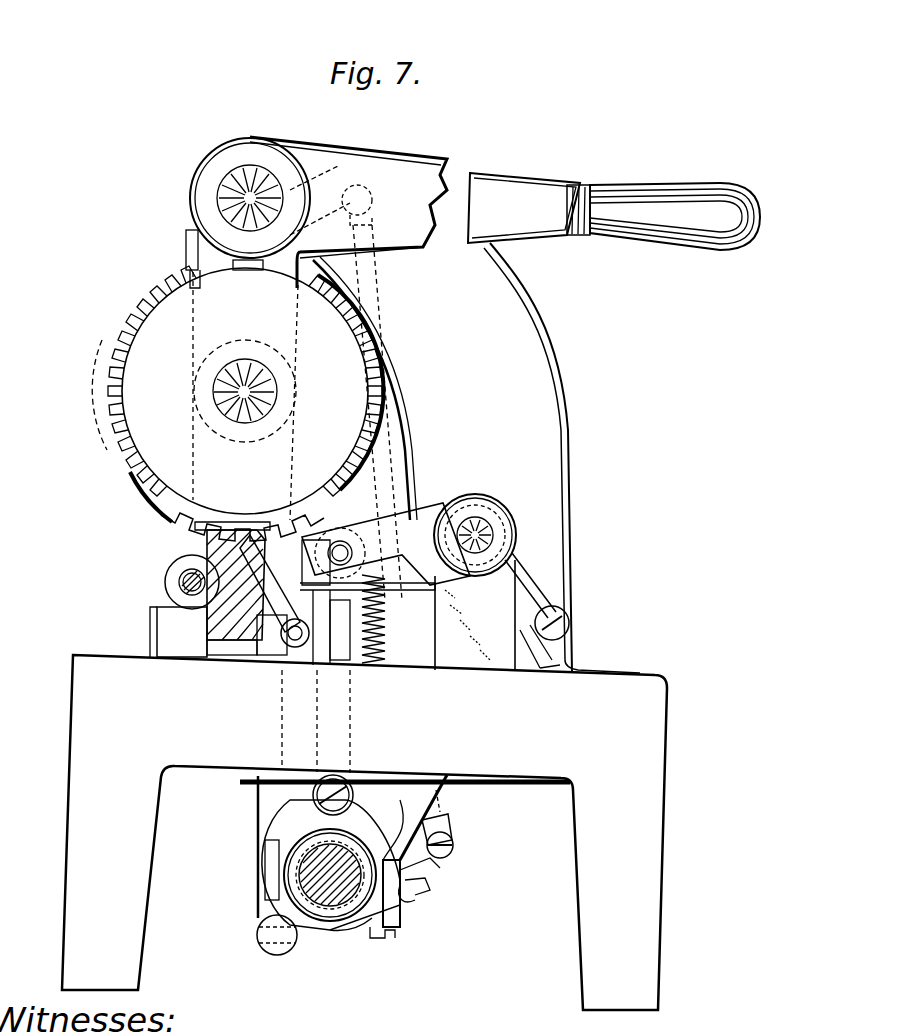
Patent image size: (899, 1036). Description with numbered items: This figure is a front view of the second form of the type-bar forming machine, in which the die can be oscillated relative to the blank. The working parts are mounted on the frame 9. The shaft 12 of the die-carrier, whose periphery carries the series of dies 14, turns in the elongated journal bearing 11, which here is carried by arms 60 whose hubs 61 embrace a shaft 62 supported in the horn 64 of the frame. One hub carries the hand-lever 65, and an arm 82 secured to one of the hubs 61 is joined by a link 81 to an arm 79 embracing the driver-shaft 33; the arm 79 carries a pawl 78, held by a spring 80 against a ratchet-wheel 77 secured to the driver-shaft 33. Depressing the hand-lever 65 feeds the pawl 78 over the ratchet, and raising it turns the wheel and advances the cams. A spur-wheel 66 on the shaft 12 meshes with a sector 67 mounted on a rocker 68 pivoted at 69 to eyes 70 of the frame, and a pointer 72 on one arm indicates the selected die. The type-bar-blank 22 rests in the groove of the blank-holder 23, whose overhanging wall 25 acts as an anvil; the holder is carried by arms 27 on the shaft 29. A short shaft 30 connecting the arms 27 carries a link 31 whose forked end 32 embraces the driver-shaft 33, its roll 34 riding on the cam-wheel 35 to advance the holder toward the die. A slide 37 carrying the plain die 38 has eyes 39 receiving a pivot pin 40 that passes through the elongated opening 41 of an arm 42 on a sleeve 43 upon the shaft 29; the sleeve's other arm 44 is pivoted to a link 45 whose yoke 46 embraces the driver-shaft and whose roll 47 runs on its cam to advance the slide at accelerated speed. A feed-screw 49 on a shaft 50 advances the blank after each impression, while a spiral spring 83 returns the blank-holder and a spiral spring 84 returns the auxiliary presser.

The frame 9 is at (230, 752).
The journal bearing 11 is at (210, 420).
The shaft 12 is at (262, 398).
The dies 14 is at (120, 380).
The type-bar-blank 22 is at (215, 640).
The blank-holder 23 is at (178, 572).
The overhanging wall 25 is at (215, 532).
The arms 27 is at (415, 505).
The shaft 29 is at (492, 535).
The short shaft 30 is at (352, 553).
The link 31 is at (305, 660).
The forked end 32 is at (398, 928).
The driver-shaft 33 is at (322, 905).
The roll 34 is at (313, 795).
The cam-wheel 35 is at (300, 830).
The slide 37 is at (278, 515).
The plain die 38 is at (238, 525).
The eyes 39 is at (345, 530).
The pivot pin 40 is at (308, 626).
The elongated opening 41 is at (265, 660).
The arm 42 is at (455, 505).
The sleeve 43 is at (505, 518).
The arm 44 is at (535, 580).
The link 45 is at (536, 672).
The yoke 46 is at (350, 932).
The roll 47 is at (270, 952).
The feed-screw 49 is at (170, 588).
The shaft 50 is at (180, 582).
The arms 60 is at (205, 257).
The hubs 61 is at (205, 198).
The shaft 62 is at (235, 170).
The horn 64 is at (565, 382).
The hand-lever 65 is at (560, 182).
The spur-wheel 66 is at (115, 432).
The sector 67 is at (140, 520).
The rocker 68 is at (262, 640).
The pivot 69 is at (160, 640).
The eyes 70 is at (157, 622).
The pointer 72 is at (138, 316).
The ratchet-wheel 77 is at (265, 856).
The pawl 78 is at (428, 884).
The arm 79 is at (440, 864).
The spring 80 is at (415, 900).
The link 81 is at (445, 800).
The arm 82 is at (360, 175).
The spiral spring 83 is at (345, 660).
The spiral spring 84 is at (420, 630).